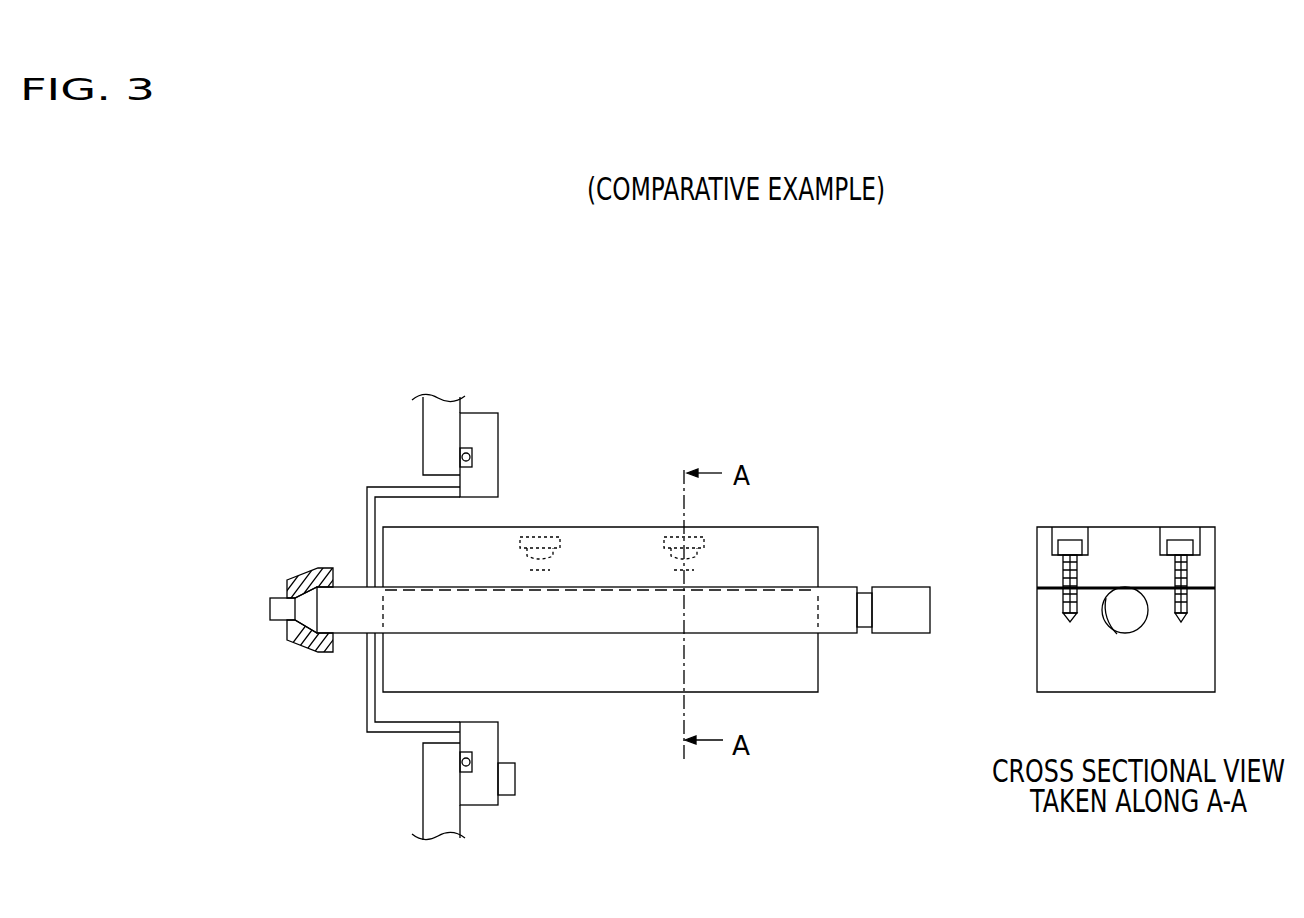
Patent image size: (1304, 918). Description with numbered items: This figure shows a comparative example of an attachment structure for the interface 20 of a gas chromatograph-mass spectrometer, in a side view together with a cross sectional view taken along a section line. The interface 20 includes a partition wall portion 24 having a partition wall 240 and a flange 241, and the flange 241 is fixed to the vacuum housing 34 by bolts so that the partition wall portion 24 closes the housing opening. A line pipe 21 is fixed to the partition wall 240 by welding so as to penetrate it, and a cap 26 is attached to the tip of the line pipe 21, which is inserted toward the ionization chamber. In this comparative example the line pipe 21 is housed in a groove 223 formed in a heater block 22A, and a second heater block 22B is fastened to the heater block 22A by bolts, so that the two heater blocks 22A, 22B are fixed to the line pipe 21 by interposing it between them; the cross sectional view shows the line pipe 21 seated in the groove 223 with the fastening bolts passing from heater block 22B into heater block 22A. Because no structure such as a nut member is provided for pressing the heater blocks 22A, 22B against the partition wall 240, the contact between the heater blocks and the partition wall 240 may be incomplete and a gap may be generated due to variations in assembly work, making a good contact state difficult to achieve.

The interface 20 is at (783, 494).
The line pipe 21 is at (832, 602).
The heater block 22A is at (617, 672).
The heater block 22B is at (613, 535).
The groove 223 is at (1117, 634).
The partition wall portion 24 is at (493, 345).
The partition wall 240 is at (373, 520).
The flange 241 is at (482, 445).
The cap 26 is at (308, 572).
The vacuum housing 34 is at (438, 798).